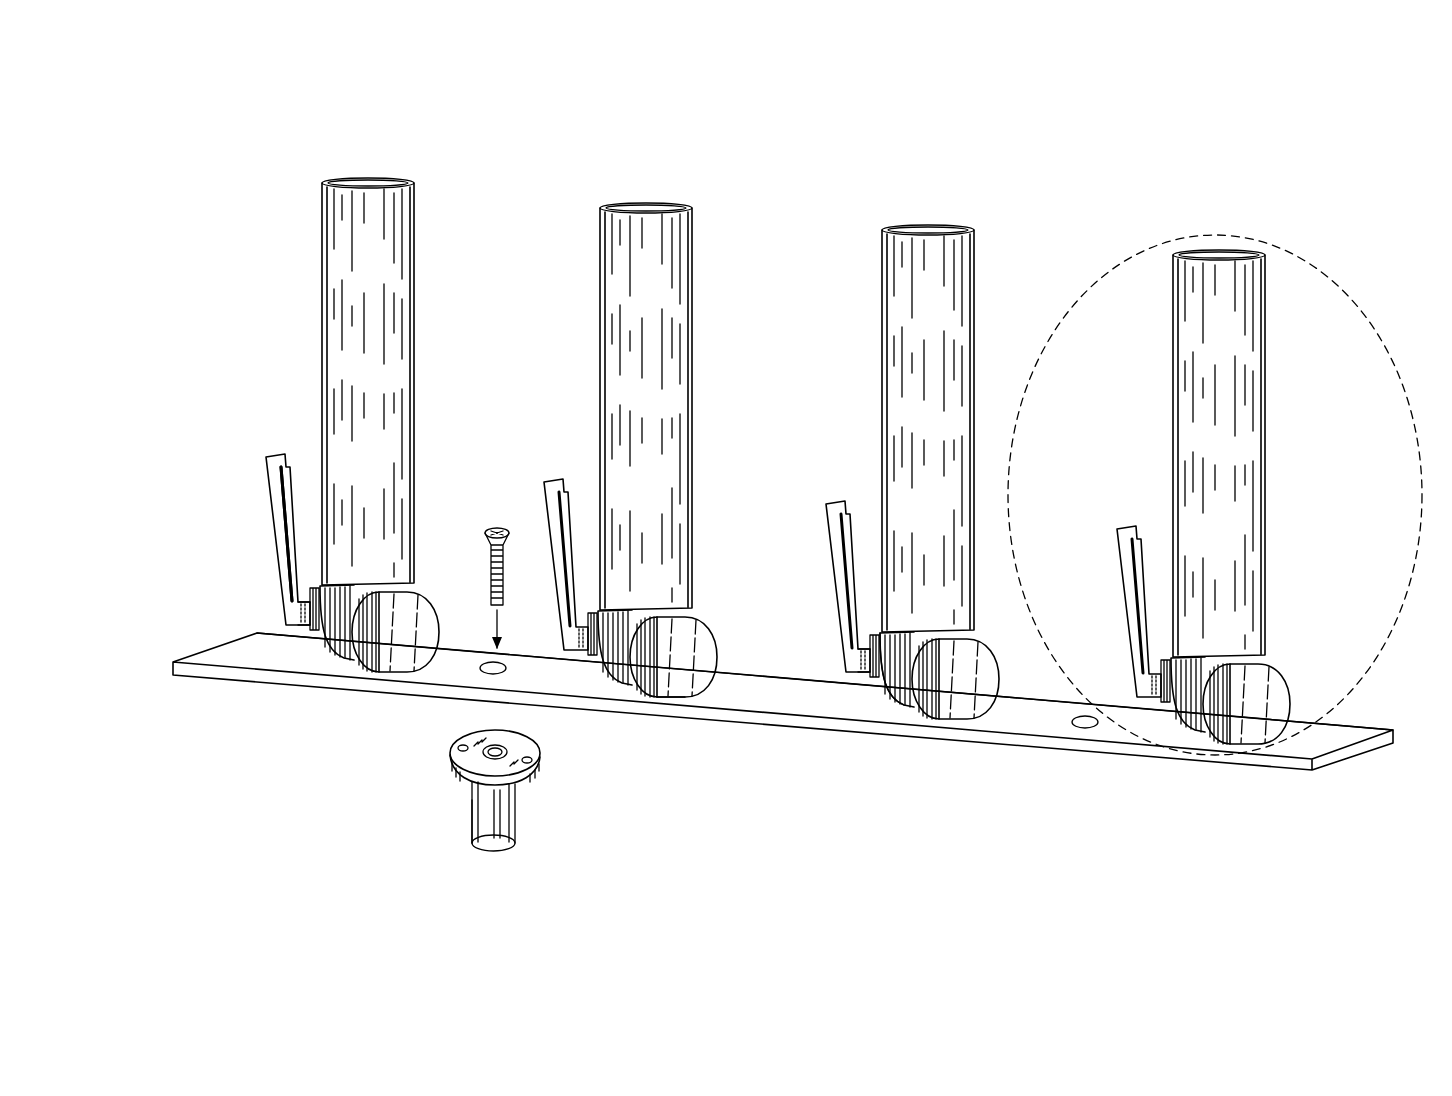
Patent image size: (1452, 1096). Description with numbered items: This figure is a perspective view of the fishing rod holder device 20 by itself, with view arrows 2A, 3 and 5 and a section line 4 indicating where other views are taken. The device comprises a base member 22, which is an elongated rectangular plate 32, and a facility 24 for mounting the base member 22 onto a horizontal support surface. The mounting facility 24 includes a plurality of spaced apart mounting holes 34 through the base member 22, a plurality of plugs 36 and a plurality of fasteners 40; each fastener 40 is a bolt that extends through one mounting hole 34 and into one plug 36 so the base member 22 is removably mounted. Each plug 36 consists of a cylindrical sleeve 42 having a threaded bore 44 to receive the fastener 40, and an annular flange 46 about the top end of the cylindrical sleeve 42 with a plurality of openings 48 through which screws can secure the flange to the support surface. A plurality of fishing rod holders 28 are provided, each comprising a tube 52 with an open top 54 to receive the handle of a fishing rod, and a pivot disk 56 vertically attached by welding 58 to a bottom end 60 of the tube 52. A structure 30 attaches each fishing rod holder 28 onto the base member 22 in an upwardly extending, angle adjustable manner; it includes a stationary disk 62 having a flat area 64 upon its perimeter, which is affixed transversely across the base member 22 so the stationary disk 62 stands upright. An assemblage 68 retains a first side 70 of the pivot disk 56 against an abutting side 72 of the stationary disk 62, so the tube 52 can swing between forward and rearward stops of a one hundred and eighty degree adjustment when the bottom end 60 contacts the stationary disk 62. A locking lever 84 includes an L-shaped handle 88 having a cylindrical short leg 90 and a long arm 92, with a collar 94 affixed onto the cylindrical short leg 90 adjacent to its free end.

The fishing rod holder device 20 is at (262, 250).
The base member 22 is at (853, 737).
The facility for mounting 24 is at (482, 783).
The fishing rod holder 28 is at (1181, 453).
The structure for attaching 30 is at (677, 652).
The elongated rectangular plate 32 is at (268, 660).
The mounting hole 34 is at (490, 662).
The plug 36 is at (462, 823).
The fastener 40 is at (487, 538).
The cylindrical sleeve 42 is at (505, 820).
The threaded bore 44 is at (505, 754).
The annular flange 46 is at (533, 760).
The opening 48 is at (458, 745).
The tube 52 is at (960, 419).
The open top 54 is at (646, 383).
The pivot disk 56 is at (858, 677).
The welding 58 is at (619, 614).
The bottom end 60 is at (1248, 676).
The stationary disk 62 is at (911, 646).
The flat area 64 is at (677, 729).
The assemblage for retaining 68 is at (243, 530).
The first side 70 is at (901, 639).
The abutting side 72 is at (374, 661).
The locking lever 84 is at (1104, 609).
The L-shaped handle 88 is at (810, 578).
The cylindrical short leg 90 is at (264, 608).
The long arm 92 is at (250, 534).
The collar 94 is at (834, 664).
The view direction 2A is at (838, 278).
The view direction 3 is at (1292, 388).
The section line 4- 4 is at (575, 352).
The detail view 5 is at (1392, 634).